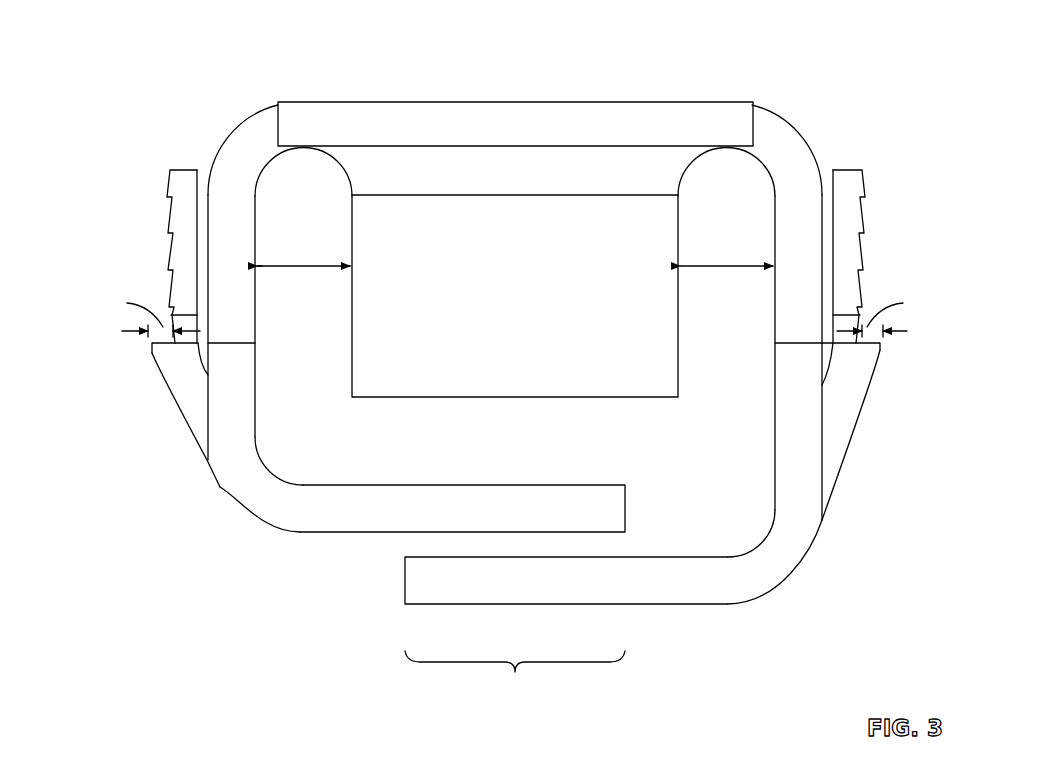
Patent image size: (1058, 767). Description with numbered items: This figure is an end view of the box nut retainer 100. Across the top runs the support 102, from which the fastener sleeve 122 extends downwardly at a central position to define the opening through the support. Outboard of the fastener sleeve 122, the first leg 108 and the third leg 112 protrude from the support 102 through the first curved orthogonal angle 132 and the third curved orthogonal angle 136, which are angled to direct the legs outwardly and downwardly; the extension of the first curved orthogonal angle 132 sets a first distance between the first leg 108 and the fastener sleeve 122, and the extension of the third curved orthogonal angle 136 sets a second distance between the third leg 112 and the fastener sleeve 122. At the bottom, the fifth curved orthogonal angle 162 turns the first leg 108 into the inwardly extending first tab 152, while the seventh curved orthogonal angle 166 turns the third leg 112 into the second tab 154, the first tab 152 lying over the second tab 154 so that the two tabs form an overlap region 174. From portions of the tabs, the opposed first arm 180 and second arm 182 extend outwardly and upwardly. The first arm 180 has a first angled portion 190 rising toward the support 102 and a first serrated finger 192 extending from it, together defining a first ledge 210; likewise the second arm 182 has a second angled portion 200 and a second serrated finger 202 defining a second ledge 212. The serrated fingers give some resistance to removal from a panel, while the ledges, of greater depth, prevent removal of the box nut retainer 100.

The box nut retainer 100 is at (132, 44).
The support 102 is at (333, 112).
The first leg 108 is at (226, 214).
The third leg 112 is at (798, 190).
The fastener sleeve 122 is at (418, 215).
The first curved orthogonal angle 132 is at (255, 135).
The third curved orthogonal angle 136 is at (763, 130).
The first tab 152 is at (383, 513).
The second tab 154 is at (463, 583).
The fifth curved orthogonal angle 162 is at (247, 502).
The seventh curved orthogonal angle 166 is at (780, 568).
The overlap region 174 is at (515, 679).
The first arm 180 is at (176, 396).
The second arm 182 is at (856, 398).
The first angled portion 190 is at (200, 418).
The first serrated finger 192 is at (168, 238).
The second angled portion 200 is at (838, 462).
The second serrated finger 202 is at (855, 265).
The first ledge 210 is at (170, 352).
The second ledge 212 is at (872, 352).